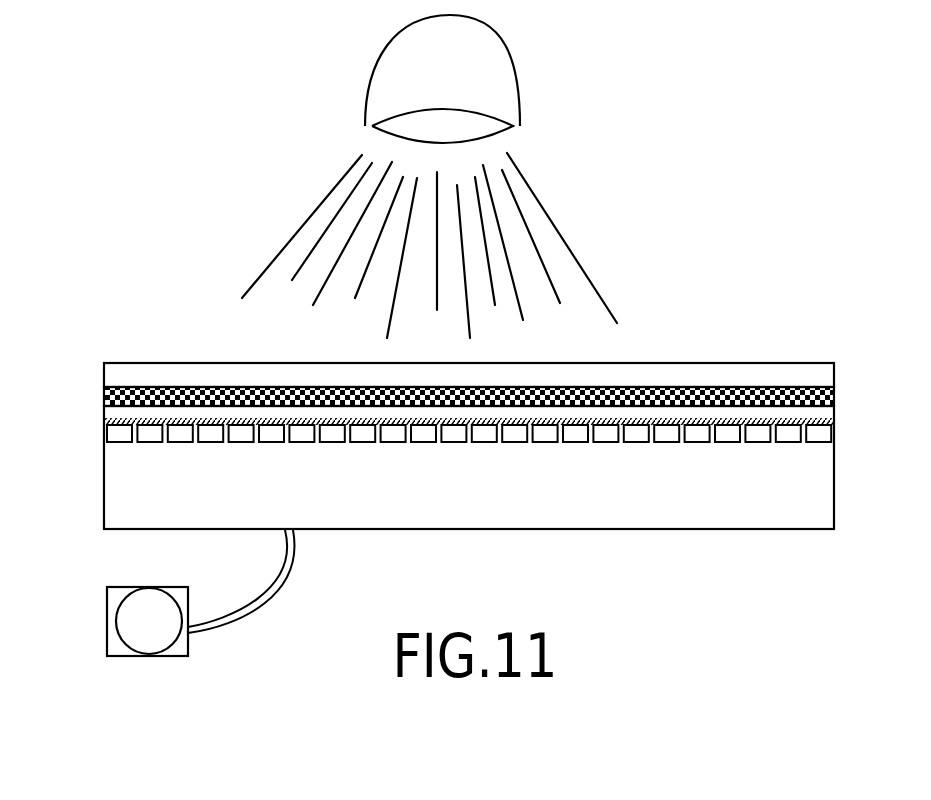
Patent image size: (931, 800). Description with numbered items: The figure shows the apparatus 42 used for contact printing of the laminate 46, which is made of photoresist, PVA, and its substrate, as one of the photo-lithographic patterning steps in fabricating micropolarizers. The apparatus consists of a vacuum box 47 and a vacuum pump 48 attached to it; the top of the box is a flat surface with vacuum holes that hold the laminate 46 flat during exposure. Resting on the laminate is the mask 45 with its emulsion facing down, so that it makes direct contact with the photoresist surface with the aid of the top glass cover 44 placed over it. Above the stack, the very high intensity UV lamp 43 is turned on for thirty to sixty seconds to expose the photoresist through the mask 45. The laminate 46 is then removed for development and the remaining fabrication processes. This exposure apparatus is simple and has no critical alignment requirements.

The apparatus 42 is at (223, 145).
The UV lamp 43 is at (497, 71).
The top glass cover 44 is at (173, 363).
The mask 45 is at (104, 398).
The laminate 46 is at (104, 422).
The vacuum box 47 is at (540, 529).
The vacuum pump 48 is at (227, 637).